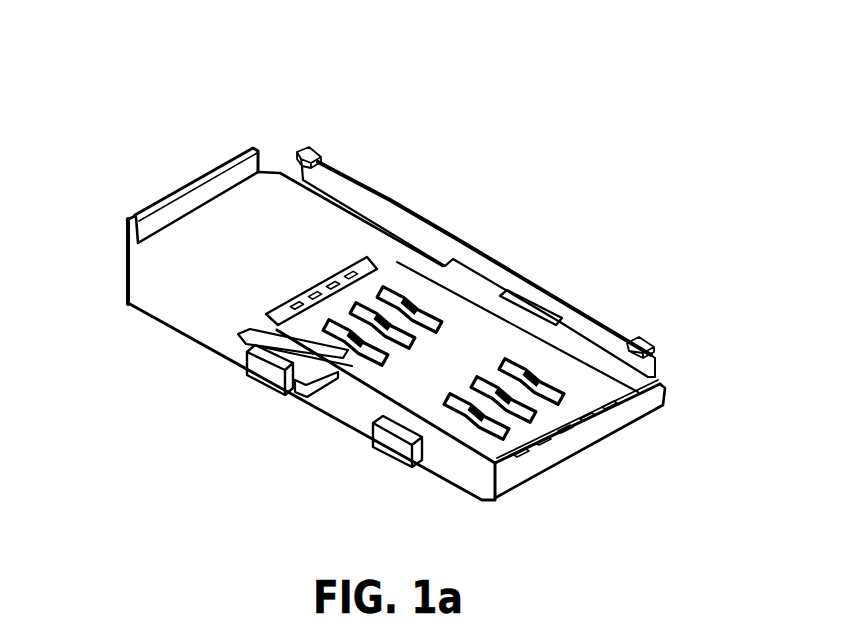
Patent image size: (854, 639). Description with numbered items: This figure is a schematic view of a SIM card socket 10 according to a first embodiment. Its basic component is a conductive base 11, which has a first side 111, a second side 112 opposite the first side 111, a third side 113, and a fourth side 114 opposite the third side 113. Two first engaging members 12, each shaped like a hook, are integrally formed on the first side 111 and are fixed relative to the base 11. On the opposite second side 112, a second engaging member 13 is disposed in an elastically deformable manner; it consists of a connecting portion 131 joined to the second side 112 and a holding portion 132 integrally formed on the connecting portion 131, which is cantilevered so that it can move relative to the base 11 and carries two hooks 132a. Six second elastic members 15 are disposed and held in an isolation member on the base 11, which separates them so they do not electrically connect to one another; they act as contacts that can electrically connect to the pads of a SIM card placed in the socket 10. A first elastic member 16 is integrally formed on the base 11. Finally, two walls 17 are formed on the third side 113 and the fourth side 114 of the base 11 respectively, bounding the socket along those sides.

The SIM card socket 10 is at (46, 66).
The base 11 is at (214, 240).
The first side 111 is at (170, 328).
The second side 112 is at (280, 157).
The third side 113 is at (242, 150).
The fourth side 114 is at (638, 422).
The first engaging member 12 is at (267, 375).
The second engaging member 13 is at (568, 128).
The connecting portion 131 is at (472, 282).
The holding portion 132 is at (552, 303).
The hook 132a is at (312, 147).
The second elastic member 15 is at (520, 419).
The first elastic member 16 is at (318, 387).
The wall 17 is at (154, 215).